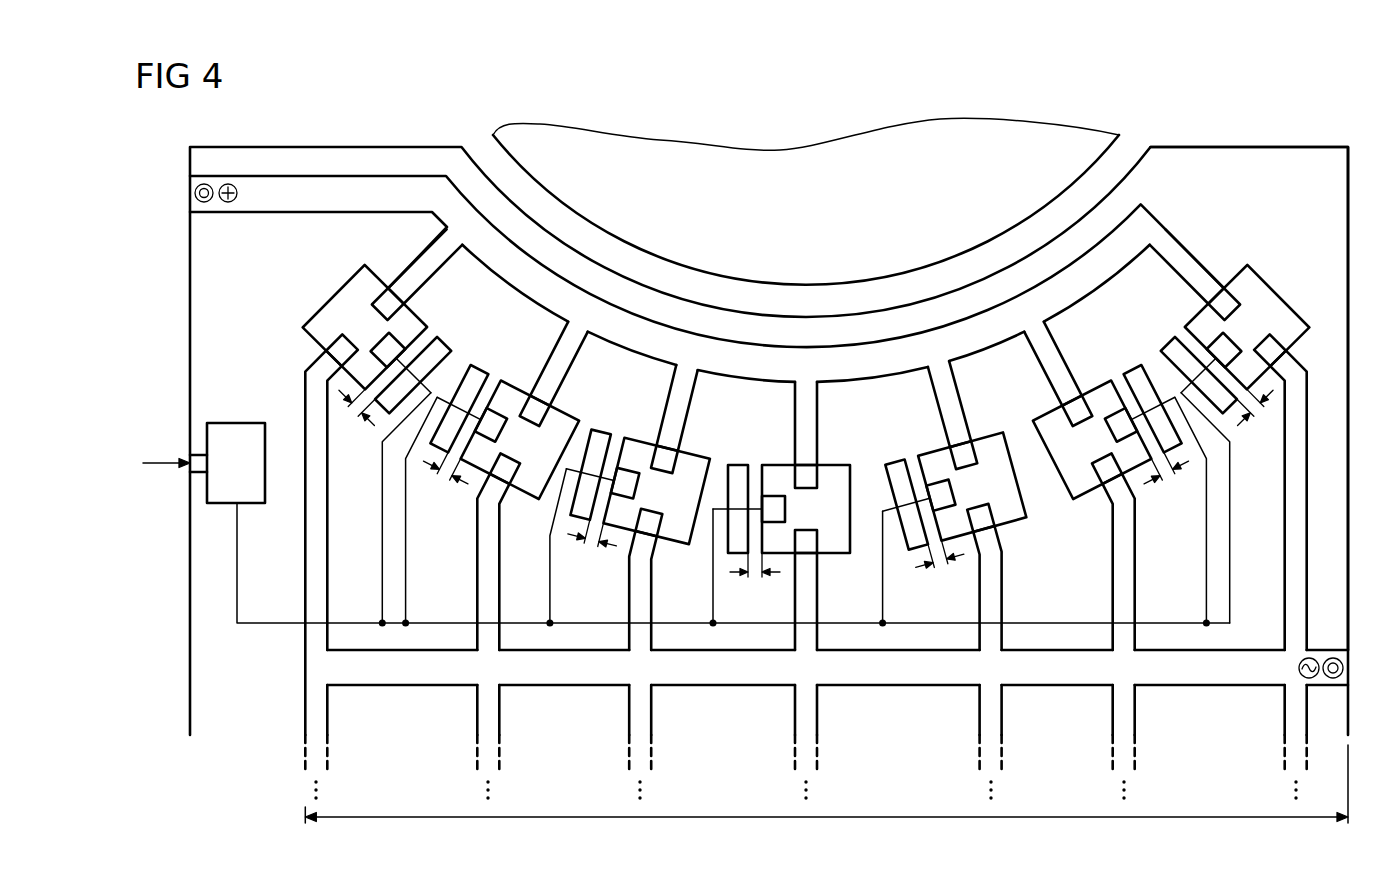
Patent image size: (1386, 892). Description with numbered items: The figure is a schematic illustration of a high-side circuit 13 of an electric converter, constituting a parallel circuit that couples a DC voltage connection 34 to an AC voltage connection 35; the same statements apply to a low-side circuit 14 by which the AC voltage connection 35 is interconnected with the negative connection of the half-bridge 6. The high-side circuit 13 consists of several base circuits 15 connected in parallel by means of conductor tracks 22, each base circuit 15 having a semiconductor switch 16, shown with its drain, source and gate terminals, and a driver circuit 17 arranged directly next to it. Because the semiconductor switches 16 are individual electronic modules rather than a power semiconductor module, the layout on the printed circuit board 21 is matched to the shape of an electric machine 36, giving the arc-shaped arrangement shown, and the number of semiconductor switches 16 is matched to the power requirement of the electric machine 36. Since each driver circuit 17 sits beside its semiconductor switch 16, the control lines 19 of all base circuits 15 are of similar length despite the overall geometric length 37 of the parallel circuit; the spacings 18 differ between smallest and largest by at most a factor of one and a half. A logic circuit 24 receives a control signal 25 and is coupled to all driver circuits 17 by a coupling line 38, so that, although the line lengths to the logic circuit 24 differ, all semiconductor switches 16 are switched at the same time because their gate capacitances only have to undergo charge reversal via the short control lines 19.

The half-bridge 6 is at (305, 128).
The high-side circuit 13 is at (265, 655).
The low-side circuit 14 is at (268, 782).
The base circuit 15 is at (430, 300).
The semiconductor switch 16 is at (331, 292).
The driver circuit 17 is at (390, 407).
The spacing 18 is at (350, 405).
The control line 19 is at (403, 352).
The printed circuit board 21 is at (1273, 142).
The conductor track 22 is at (1181, 250).
The logic circuit 24 is at (238, 422).
The control signal 25 is at (160, 457).
The DC voltage connection 34 is at (207, 214).
The AC voltage connection 35 is at (1330, 650).
The electric machine 36 is at (782, 158).
The overall geometric length 37 is at (898, 814).
The coupling line 38 is at (273, 621).